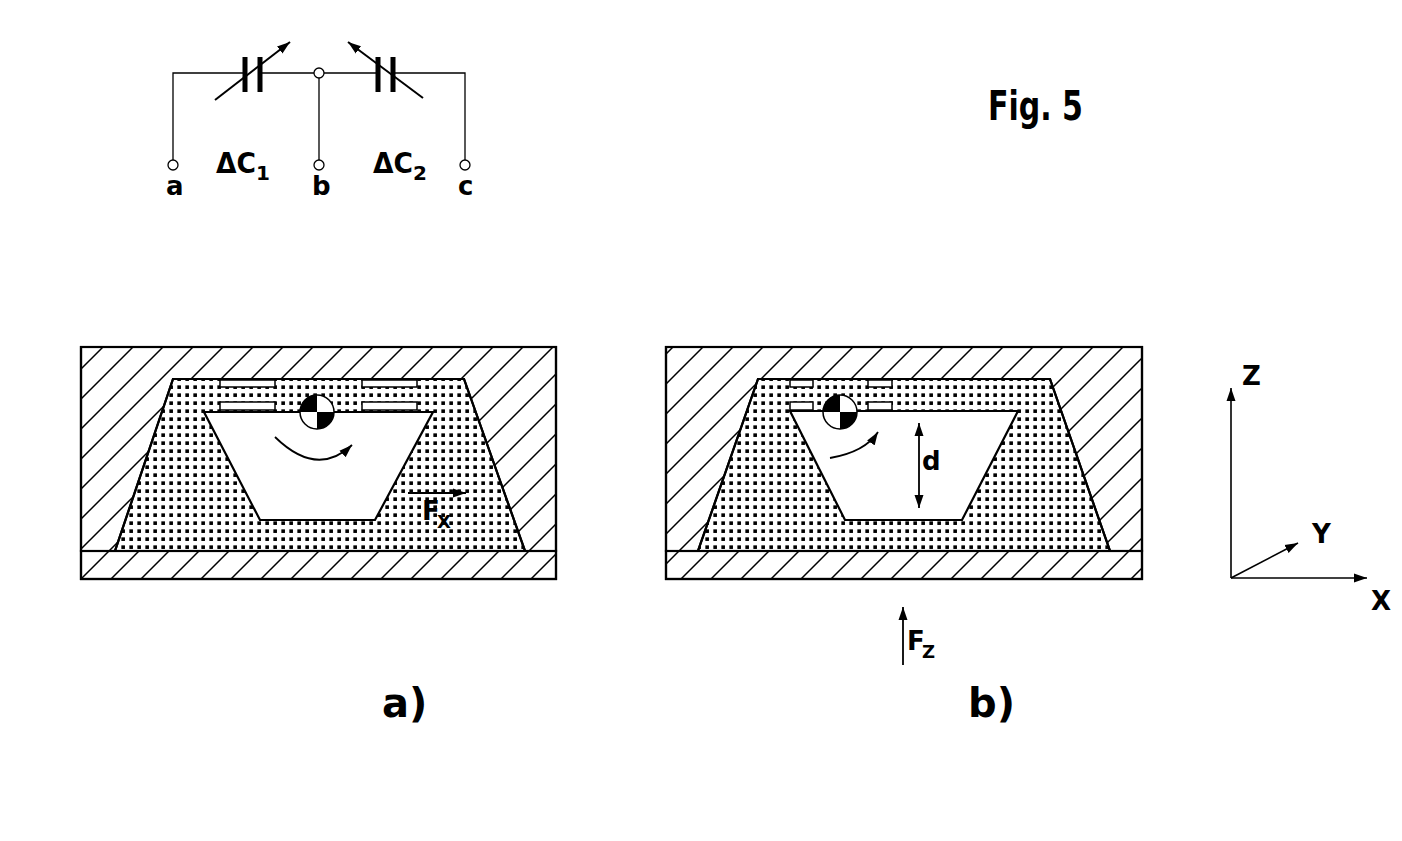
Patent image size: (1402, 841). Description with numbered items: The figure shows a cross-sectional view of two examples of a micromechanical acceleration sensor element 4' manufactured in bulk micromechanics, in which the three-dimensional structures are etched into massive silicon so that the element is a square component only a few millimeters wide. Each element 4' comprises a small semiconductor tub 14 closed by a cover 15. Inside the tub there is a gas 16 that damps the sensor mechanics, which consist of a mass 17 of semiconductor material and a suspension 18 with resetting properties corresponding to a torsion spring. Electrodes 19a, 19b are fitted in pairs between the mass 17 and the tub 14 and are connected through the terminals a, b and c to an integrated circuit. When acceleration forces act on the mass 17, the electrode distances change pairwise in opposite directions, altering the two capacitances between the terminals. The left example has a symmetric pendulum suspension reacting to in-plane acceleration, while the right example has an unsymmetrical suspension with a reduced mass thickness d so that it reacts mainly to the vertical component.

The acceleration sensor element 4' is at (611, 399).
The semiconductor tub 14 is at (518, 378).
The cover 15 is at (520, 567).
The gas 16 is at (183, 520).
The mass 17 is at (278, 497).
The suspension 18 is at (325, 395).
The electrode 19a is at (248, 384).
The electrode 19b is at (405, 402).